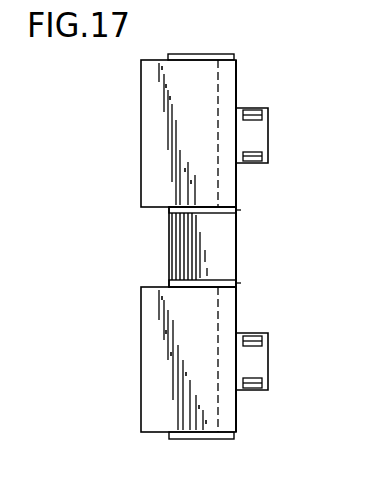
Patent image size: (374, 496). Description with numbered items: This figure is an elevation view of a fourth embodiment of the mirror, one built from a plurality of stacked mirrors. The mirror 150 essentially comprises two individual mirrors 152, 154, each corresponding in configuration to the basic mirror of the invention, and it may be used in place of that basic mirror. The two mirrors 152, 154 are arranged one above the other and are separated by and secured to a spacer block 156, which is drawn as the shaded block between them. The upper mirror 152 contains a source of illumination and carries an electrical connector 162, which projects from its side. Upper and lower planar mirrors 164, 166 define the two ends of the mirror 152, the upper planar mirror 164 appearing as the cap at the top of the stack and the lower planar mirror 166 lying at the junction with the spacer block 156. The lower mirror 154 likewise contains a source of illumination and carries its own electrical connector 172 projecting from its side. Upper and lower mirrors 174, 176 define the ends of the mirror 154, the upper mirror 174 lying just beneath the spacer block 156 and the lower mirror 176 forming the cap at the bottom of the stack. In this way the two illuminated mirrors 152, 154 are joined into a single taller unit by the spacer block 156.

The mirror 150 is at (139, 177).
The individual mirror 152 is at (141, 120).
The individual mirror 154 is at (141, 388).
The spacer block 156 is at (169, 245).
The electrical connector 162 is at (268, 124).
The upper planar mirror 164 is at (215, 56).
The lower planar mirror 166 is at (210, 209).
The electrical connector 172 is at (262, 370).
The upper mirror 174 is at (203, 283).
The lower mirror 176 is at (232, 437).